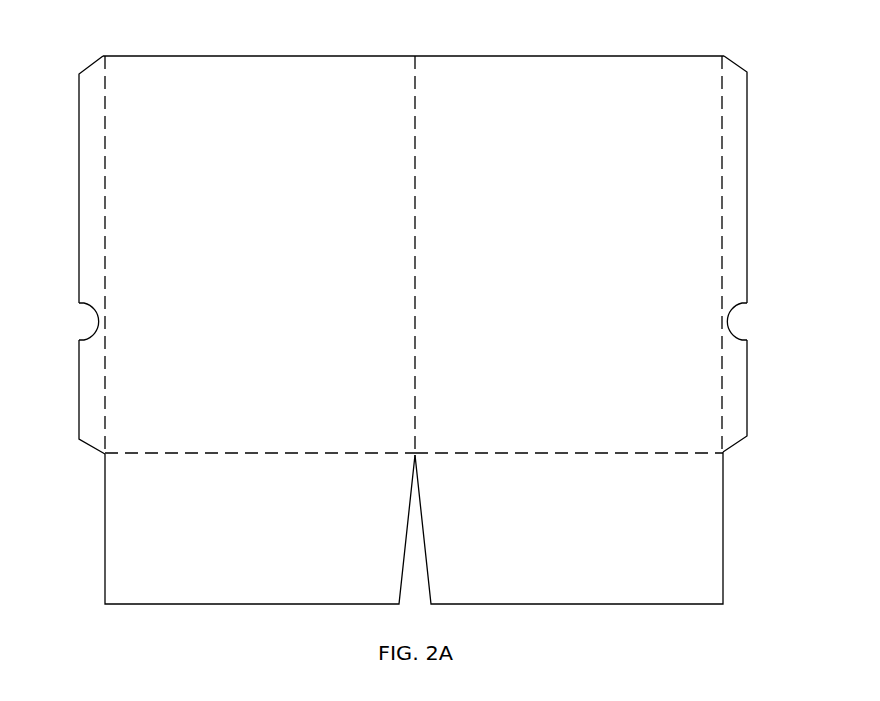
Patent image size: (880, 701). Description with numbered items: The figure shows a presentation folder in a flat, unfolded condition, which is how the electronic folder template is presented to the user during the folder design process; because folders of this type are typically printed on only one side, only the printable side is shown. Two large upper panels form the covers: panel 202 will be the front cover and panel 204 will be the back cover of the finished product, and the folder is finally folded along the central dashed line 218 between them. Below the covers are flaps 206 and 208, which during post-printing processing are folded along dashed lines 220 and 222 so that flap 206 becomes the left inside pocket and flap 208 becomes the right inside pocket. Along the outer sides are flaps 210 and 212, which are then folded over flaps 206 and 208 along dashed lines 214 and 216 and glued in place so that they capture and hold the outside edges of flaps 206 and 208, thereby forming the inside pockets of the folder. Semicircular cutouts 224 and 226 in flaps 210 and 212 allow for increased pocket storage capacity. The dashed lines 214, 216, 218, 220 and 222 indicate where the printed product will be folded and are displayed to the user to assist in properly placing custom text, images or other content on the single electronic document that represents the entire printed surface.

The panel 202 is at (568, 128).
The panel 204 is at (260, 122).
The flap 206 is at (522, 557).
The flap 208 is at (283, 555).
The flap 210 is at (737, 217).
The flap 212 is at (92, 173).
The dashed line 214 is at (722, 183).
The dashed line 216 is at (105, 230).
The dashed line 218 is at (412, 195).
The dashed line 220 is at (488, 452).
The dashed line 222 is at (165, 452).
The semicircular cutout 224 is at (727, 322).
The semicircular cutout 226 is at (105, 322).